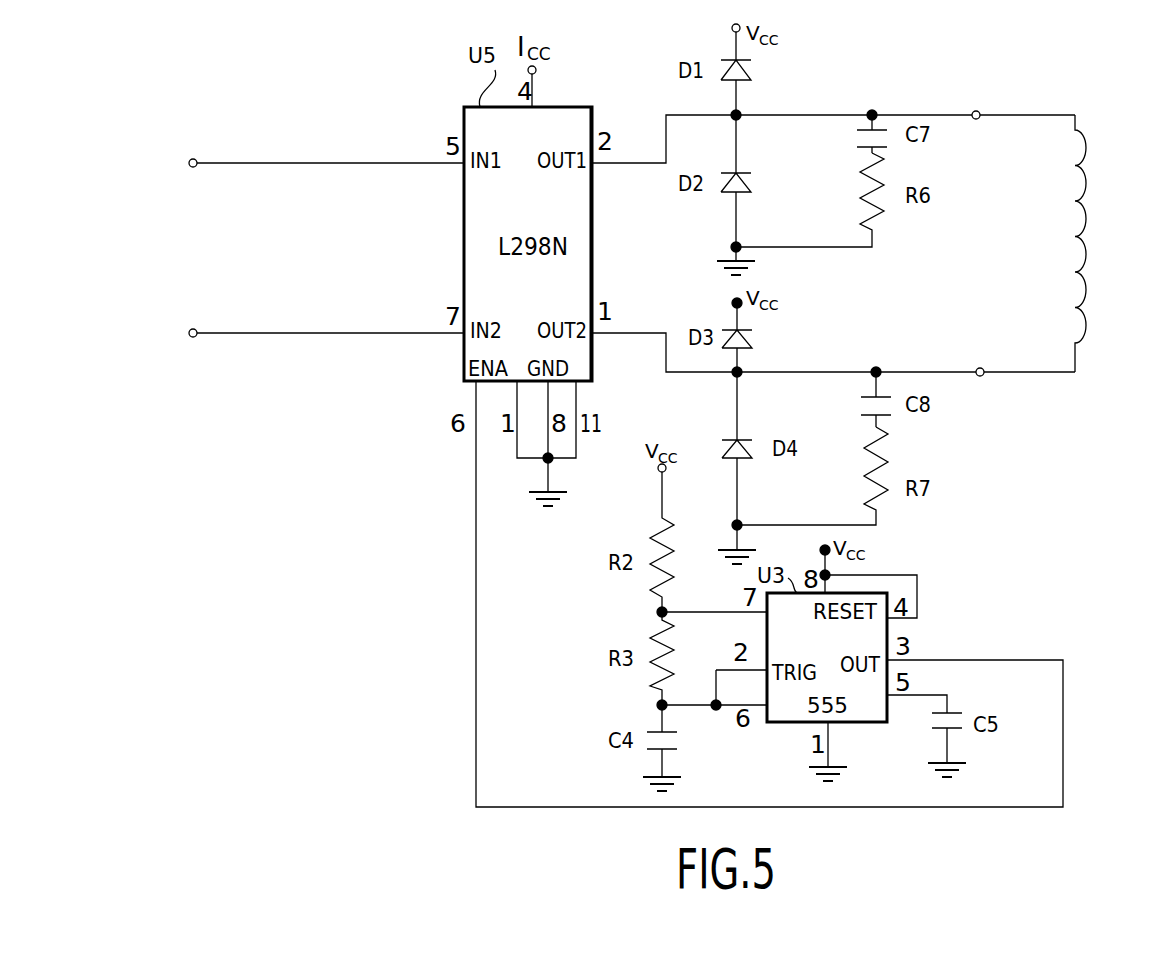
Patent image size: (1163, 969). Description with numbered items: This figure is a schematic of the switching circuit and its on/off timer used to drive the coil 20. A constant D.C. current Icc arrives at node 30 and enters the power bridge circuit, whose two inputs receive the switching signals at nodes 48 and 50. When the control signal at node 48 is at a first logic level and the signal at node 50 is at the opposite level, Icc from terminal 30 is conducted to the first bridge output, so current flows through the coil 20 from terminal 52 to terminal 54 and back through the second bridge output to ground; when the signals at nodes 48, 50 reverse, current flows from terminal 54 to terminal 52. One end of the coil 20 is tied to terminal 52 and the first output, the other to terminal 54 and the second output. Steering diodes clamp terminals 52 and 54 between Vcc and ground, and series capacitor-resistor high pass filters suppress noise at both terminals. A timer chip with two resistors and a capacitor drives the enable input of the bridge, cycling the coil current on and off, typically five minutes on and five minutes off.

The switching signal source node 48 is at (190, 167).
The switching signal source node 50 is at (190, 337).
The constant current D.C. output node 30 is at (536, 70).
The coil terminal 52 is at (976, 111).
The coil terminal 54 is at (980, 367).
The coil 20 is at (1085, 228).